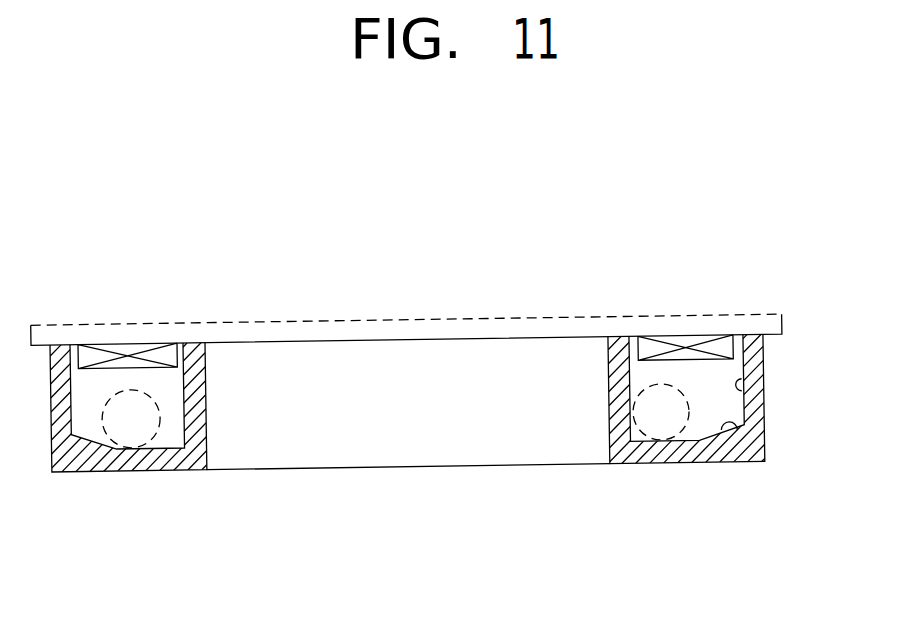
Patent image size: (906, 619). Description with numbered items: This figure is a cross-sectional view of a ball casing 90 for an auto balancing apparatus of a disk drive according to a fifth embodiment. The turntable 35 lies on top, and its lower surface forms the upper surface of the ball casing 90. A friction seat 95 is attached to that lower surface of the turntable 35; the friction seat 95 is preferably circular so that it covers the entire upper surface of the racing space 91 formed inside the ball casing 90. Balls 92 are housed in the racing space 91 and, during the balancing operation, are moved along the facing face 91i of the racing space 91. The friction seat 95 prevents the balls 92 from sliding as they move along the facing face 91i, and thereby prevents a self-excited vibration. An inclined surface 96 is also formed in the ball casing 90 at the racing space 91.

The turntable 35 is at (130, 336).
The ball casing 90 is at (450, 434).
The racing space 91 is at (698, 447).
The facing face 91i is at (741, 401).
The balls 92 is at (130, 441).
The friction seat 95 is at (93, 348).
The inclined surface 96 is at (721, 441).